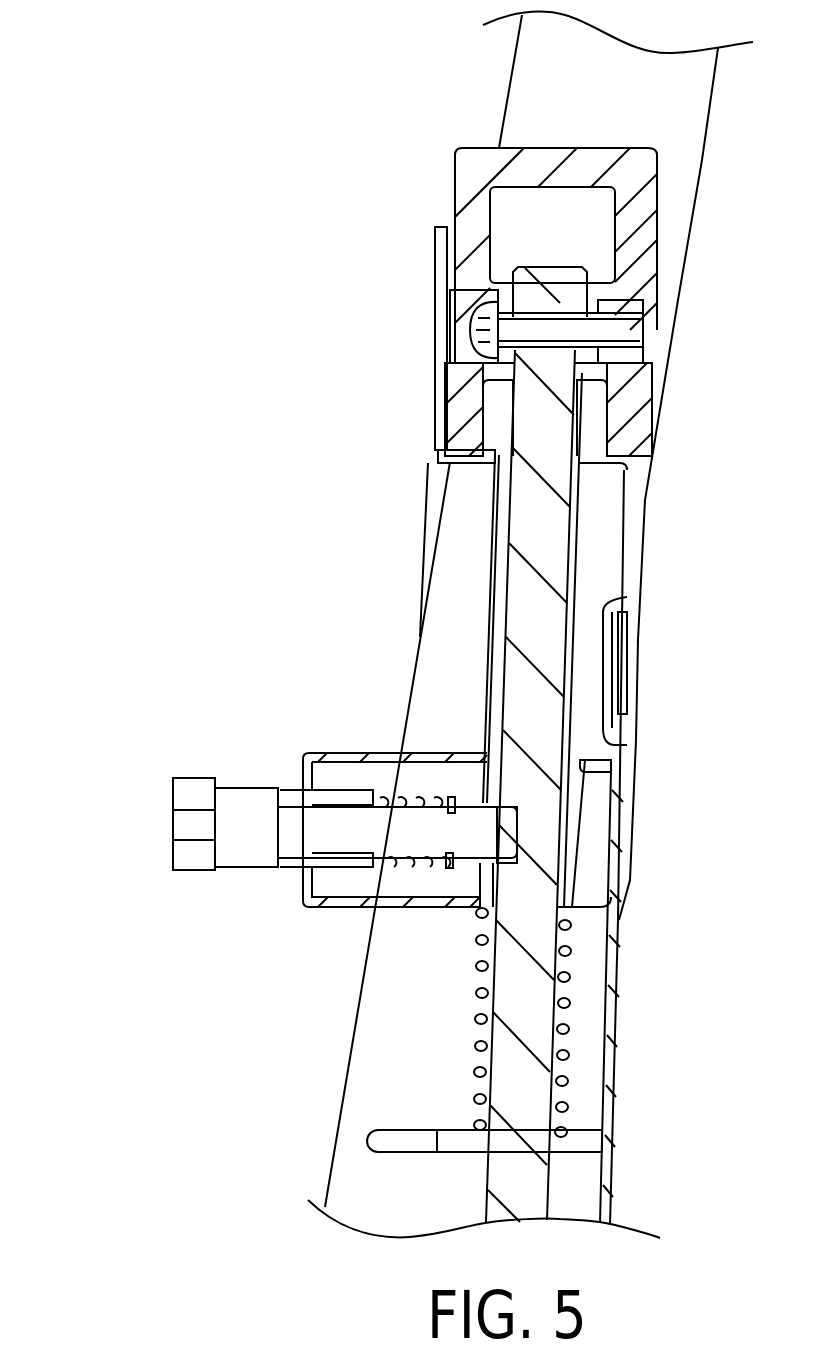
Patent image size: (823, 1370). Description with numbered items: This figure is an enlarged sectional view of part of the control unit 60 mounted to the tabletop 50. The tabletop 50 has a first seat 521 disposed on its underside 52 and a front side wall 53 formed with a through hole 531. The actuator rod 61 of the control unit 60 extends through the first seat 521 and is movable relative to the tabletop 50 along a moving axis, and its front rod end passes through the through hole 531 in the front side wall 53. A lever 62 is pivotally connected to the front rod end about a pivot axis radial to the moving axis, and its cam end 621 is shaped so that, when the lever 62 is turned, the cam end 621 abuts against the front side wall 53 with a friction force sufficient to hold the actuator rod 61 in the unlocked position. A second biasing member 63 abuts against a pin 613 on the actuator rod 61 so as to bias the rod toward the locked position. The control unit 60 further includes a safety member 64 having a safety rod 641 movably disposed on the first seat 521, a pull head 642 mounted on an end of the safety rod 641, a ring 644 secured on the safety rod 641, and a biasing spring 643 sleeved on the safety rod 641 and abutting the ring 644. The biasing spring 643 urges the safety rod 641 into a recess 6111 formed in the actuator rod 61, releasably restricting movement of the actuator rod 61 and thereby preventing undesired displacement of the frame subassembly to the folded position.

The tabletop 50 is at (648, 876).
The underside 52 is at (590, 1075).
The front side wall 53 is at (486, 447).
The control unit 60 is at (559, 300).
The actuator rod 61 is at (545, 786).
The lever 62 is at (465, 178).
The second biasing member 63 is at (590, 1010).
The safety member 64 is at (272, 895).
The first seat 521 is at (380, 755).
The through hole 531 is at (580, 482).
The pin 613 is at (570, 1160).
The cam end 621 is at (635, 440).
The safety rod 641 is at (305, 805).
The pull head 642 is at (190, 825).
The biasing spring 643 is at (410, 880).
The ring 644 is at (455, 870).
The recess 6111 is at (525, 815).